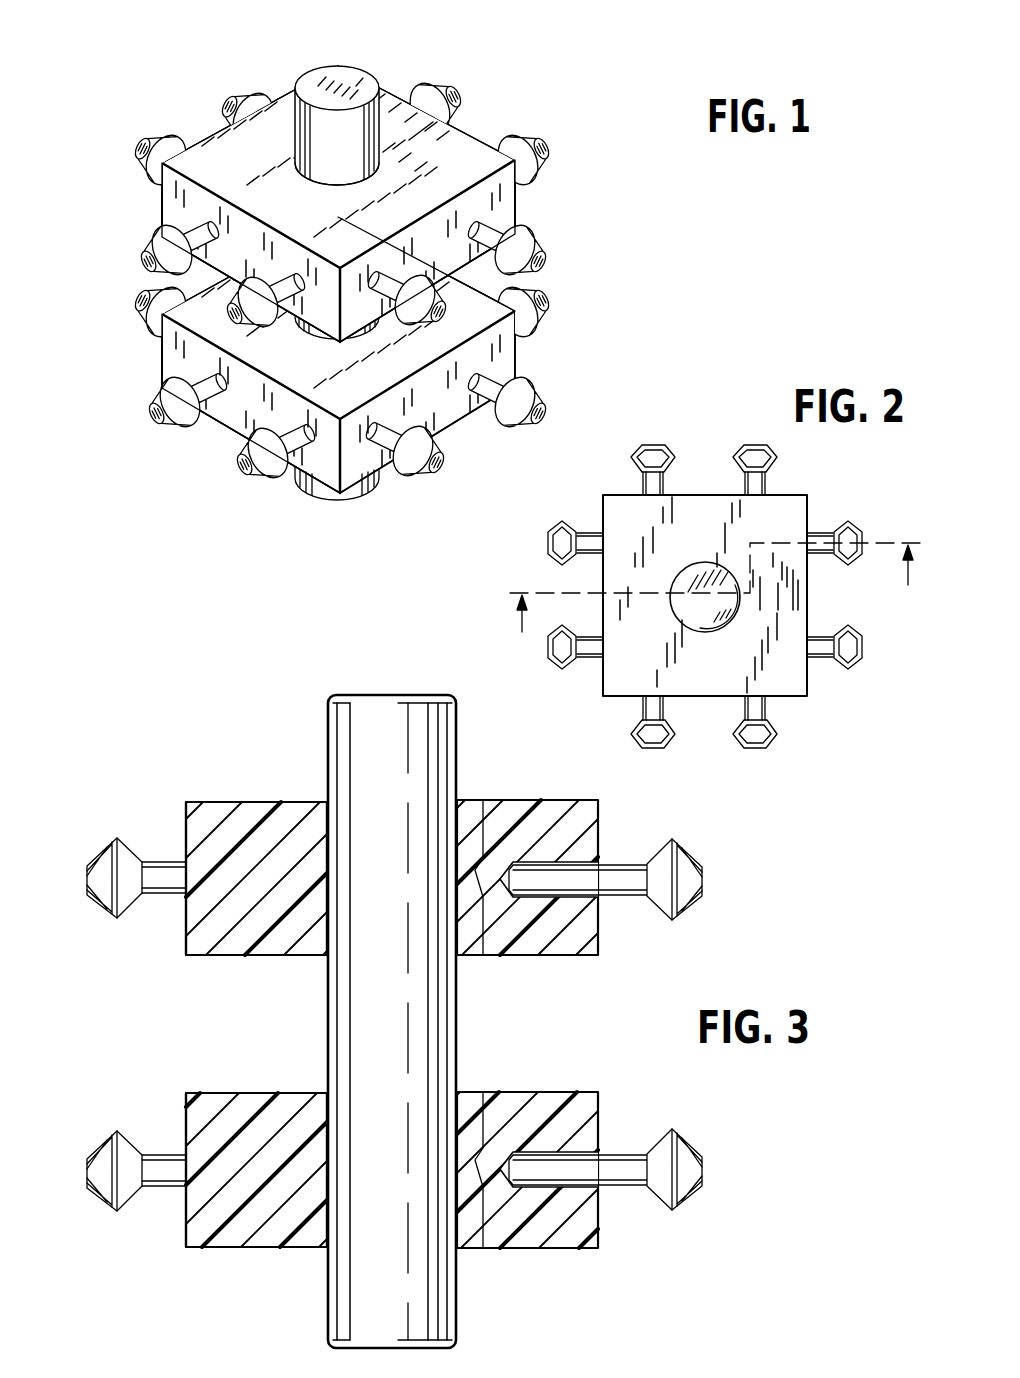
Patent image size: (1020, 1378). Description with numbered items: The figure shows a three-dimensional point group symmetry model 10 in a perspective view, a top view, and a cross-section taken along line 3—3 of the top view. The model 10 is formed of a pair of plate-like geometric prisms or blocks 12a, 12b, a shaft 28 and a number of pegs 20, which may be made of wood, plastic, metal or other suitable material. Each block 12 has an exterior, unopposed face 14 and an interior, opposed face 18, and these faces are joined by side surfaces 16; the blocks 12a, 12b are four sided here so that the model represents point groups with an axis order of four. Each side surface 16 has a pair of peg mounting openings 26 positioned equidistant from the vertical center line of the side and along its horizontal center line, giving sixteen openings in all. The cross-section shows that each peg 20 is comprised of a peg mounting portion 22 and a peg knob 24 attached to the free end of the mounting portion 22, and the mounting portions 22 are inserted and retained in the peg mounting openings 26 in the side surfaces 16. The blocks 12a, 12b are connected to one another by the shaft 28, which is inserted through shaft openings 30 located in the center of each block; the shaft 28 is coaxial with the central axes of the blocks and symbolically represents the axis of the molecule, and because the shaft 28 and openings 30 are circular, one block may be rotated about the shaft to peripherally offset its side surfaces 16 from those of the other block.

In FIG. 1, the point group symmetry model 10 is at (575, 192).
In FIG. 2, the block 12 is at (603, 510).
In FIG. 3, the block 12 is at (513, 800).
In FIG. 1, the first block 12a is at (213, 153).
In FIG. 1, the second block 12b is at (172, 357).
In FIG. 1, the exterior face 14 is at (537, 146).
In FIG. 3, the exterior face 14 is at (218, 802).
In FIG. 1, the side surface 16 is at (173, 198).
In FIG. 3, the side surface 16 is at (192, 918).
In FIG. 1, the interior face 18 is at (528, 298).
In FIG. 3, the interior face 18 is at (231, 1093).
In FIG. 1, the peg 20 is at (447, 102).
In FIG. 2, the peg 20 is at (748, 442).
In FIG. 3, the peg 20 is at (102, 887).
In FIG. 3, the peg mounting portion 22 is at (614, 864).
In FIG. 3, the peg knob 24 is at (687, 848).
In FIG. 3, the peg mounting opening 26 is at (600, 900).
In FIG. 1, the shaft 28 is at (339, 92).
In FIG. 2, the shaft 28 is at (683, 607).
In FIG. 3, the shaft 28 is at (380, 700).
In FIG. 1, the shaft opening 30 is at (295, 150).
In FIG. 3, the shaft opening 30 is at (326, 802).
In FIG. 2, the section line 3- 3 is at (715, 574).